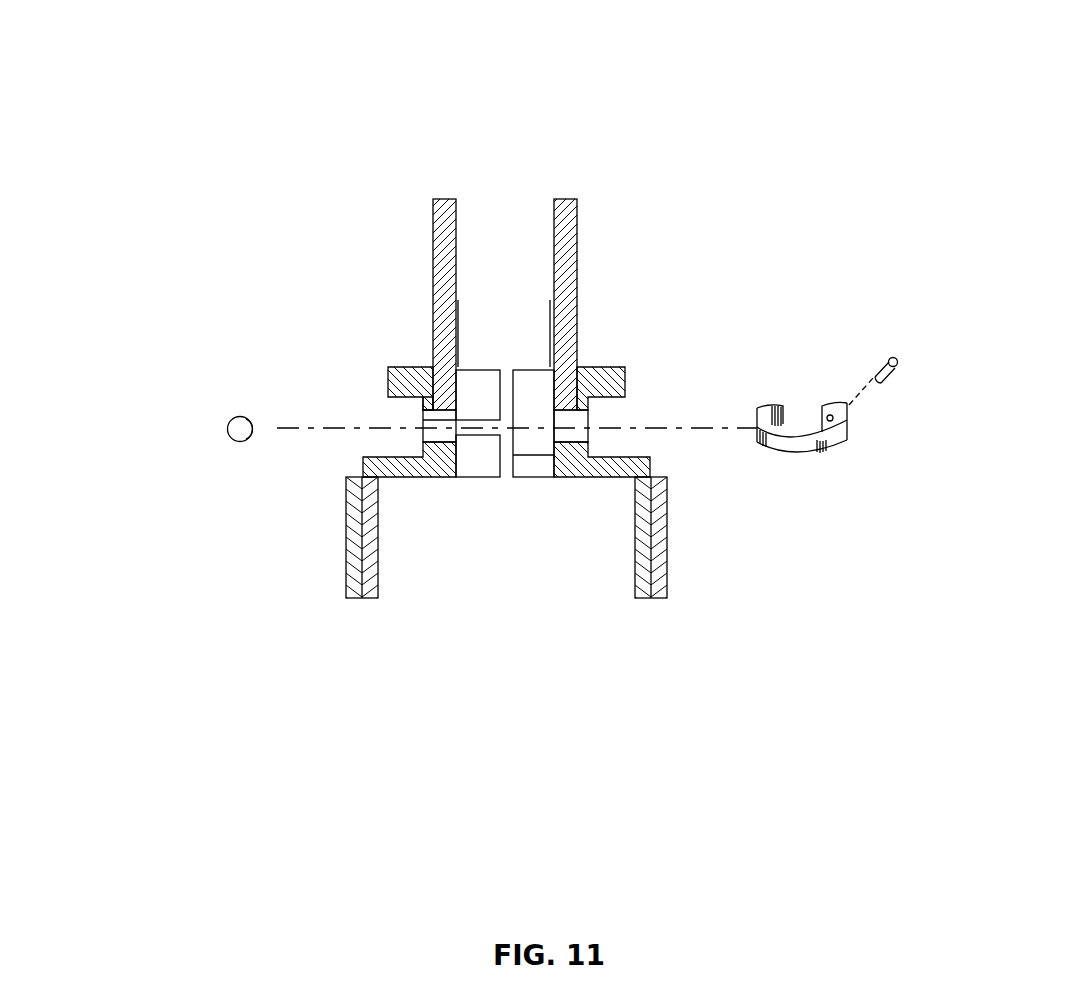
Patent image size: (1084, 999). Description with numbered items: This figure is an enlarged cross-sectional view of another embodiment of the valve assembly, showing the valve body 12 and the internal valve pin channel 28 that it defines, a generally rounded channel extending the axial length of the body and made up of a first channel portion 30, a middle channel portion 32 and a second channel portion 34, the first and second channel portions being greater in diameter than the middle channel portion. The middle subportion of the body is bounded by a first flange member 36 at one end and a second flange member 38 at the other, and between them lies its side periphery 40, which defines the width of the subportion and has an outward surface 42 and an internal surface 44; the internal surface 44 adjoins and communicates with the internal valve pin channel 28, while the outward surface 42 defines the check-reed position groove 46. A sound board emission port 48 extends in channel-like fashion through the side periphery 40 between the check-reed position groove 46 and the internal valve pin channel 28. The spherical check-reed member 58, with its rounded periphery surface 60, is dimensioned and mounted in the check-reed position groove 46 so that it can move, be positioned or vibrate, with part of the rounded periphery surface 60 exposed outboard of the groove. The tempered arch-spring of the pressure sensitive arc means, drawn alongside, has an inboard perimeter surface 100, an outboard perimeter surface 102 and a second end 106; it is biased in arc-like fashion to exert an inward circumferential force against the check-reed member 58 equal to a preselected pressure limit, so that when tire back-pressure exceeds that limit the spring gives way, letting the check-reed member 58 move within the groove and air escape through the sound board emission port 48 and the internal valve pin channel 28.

The valve body 12 is at (625, 335).
The internal valve pin channel 28 is at (525, 170).
The first channel portion 30 is at (552, 253).
The middle channel portion 32 is at (512, 400).
The second channel portion 34 is at (635, 553).
The first flange member 36 is at (625, 375).
The second flange member 38 is at (652, 458).
The side periphery 40 is at (423, 405).
The outward surface 42 is at (615, 409).
The internal surface 44 is at (500, 445).
The check-reed position groove 46 is at (450, 428).
The sound board emission port 48 is at (480, 427).
The spherical check-reed member 58 is at (166, 521).
The rounded periphery surface 60 is at (251, 442).
The inboard perimeter surface 100 is at (762, 413).
The outboard perimeter surface 102 is at (836, 419).
The second end 106 is at (782, 412).